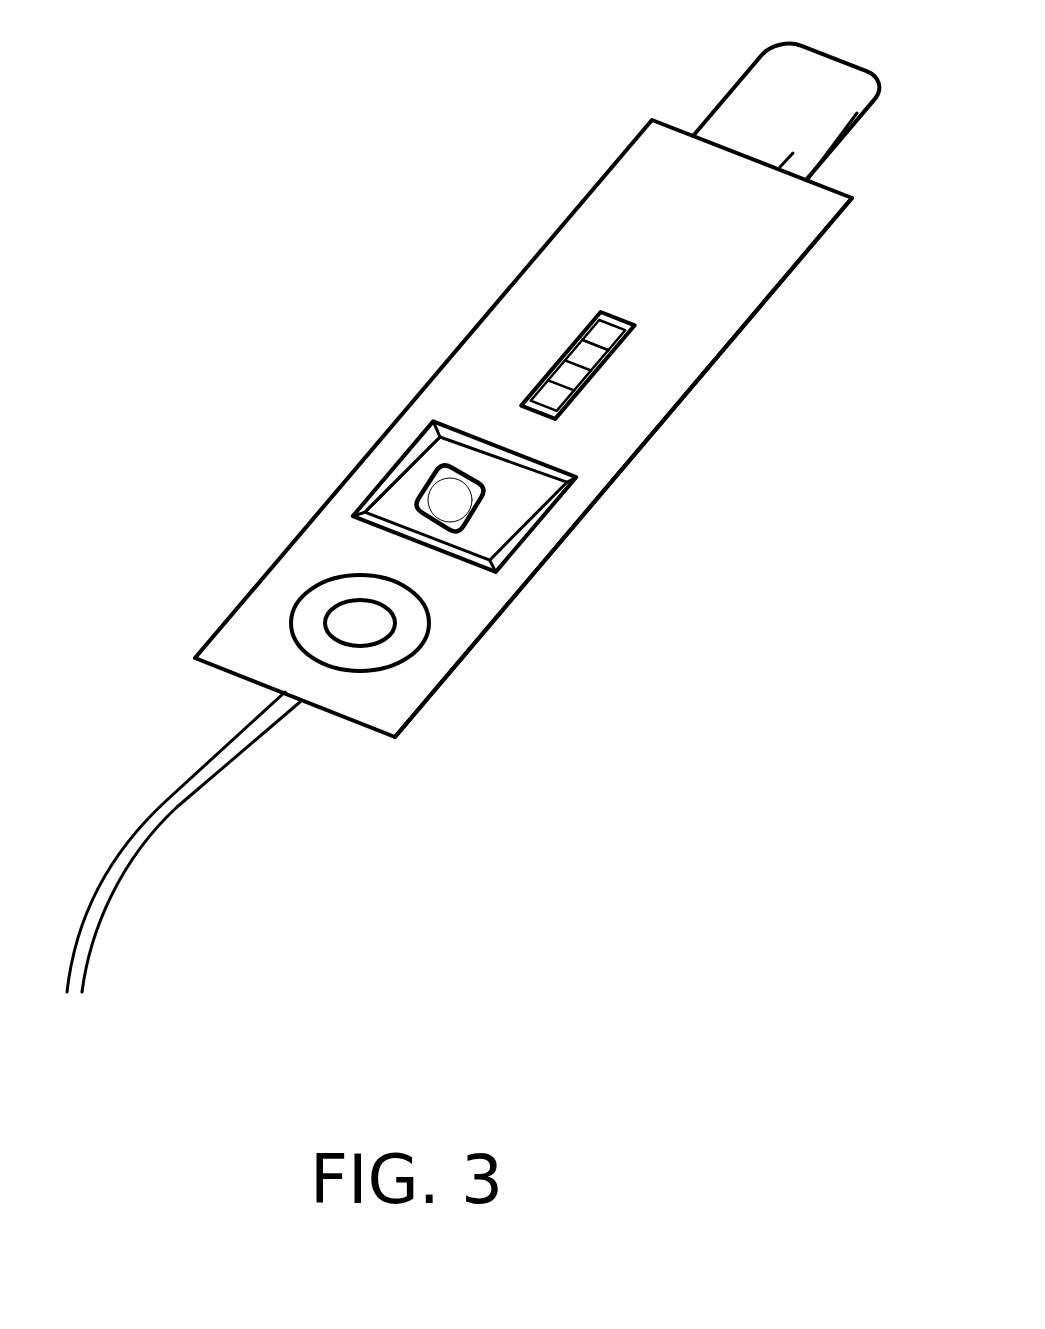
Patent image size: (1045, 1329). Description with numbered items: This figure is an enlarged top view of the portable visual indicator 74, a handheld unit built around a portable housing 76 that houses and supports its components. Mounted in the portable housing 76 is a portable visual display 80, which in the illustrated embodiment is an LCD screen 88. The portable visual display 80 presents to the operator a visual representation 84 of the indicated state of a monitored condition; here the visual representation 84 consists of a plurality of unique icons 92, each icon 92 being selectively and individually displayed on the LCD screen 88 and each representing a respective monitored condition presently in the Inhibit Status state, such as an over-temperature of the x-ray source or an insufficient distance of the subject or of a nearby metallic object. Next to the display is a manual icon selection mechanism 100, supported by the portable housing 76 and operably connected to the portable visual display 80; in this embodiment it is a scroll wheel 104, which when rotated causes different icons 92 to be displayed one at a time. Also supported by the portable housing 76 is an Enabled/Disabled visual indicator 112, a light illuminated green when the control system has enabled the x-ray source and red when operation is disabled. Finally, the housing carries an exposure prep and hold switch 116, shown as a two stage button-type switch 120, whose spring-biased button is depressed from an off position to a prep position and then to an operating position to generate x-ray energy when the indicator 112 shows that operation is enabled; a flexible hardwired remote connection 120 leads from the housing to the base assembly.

The portable visual indicator 74 is at (587, 237).
The portable housing 76 is at (735, 273).
The portable visual display 80 is at (538, 483).
The visual representation 84 is at (413, 503).
The LCD screen 88 is at (488, 548).
The icon 92 is at (406, 495).
The manual icon selection mechanism 100 is at (597, 352).
The scroll wheel 104 is at (565, 372).
The Enabled/Disabled visual indicator 112 is at (403, 637).
The exposure prep and hold switch 116 is at (762, 106).
The two stage button-type switch 120 is at (165, 833).